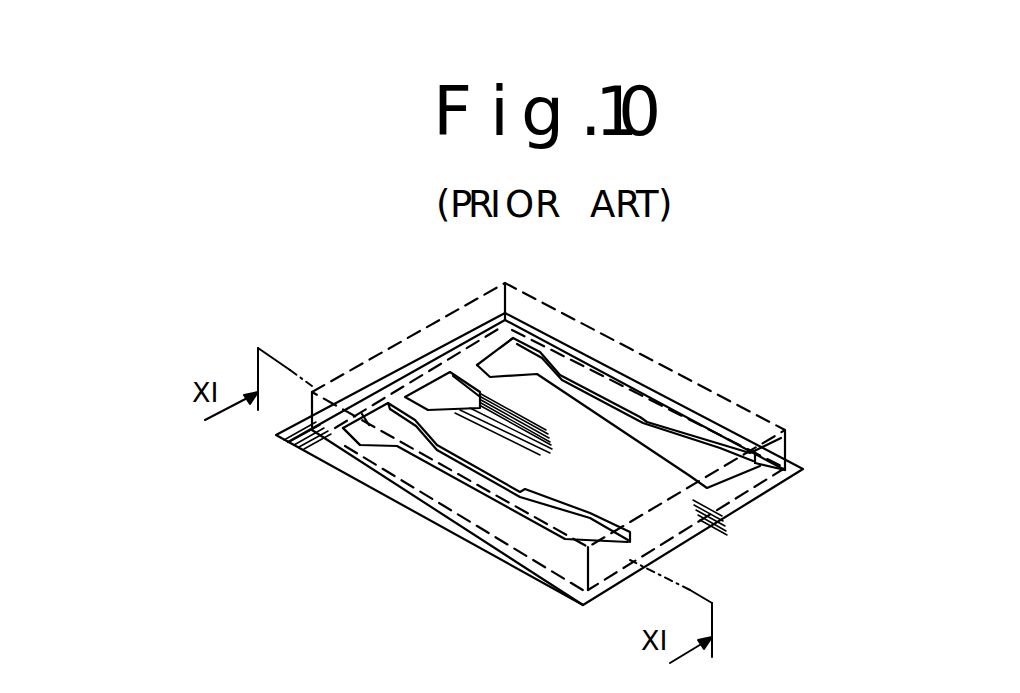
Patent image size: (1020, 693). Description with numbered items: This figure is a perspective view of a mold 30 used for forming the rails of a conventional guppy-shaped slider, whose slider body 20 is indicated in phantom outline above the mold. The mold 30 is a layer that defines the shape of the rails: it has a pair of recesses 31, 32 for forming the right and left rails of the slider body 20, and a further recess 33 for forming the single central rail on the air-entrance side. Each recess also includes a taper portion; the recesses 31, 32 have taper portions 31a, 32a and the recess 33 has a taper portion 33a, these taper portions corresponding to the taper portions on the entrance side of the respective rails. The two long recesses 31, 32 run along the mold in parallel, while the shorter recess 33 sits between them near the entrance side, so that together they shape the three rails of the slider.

The slider body 20 is at (643, 350).
The mold 30 is at (680, 527).
The recess 31 is at (576, 534).
The taper portion 31a is at (350, 434).
The recess 32 is at (720, 460).
The taper portion 32a is at (520, 340).
The recess 33 is at (445, 396).
The taper portion 33a is at (413, 392).